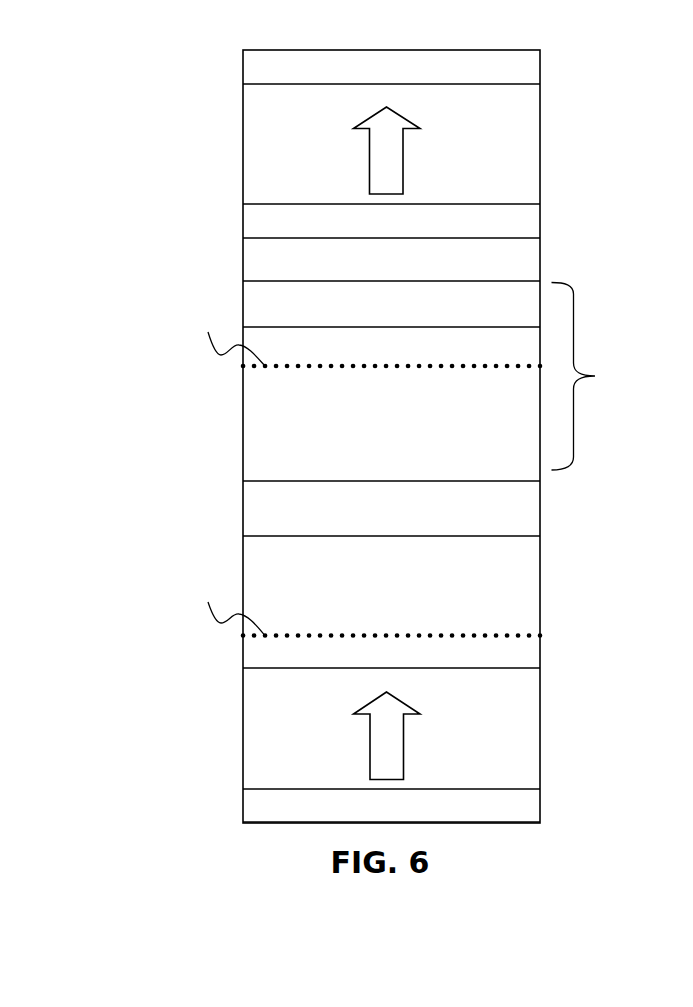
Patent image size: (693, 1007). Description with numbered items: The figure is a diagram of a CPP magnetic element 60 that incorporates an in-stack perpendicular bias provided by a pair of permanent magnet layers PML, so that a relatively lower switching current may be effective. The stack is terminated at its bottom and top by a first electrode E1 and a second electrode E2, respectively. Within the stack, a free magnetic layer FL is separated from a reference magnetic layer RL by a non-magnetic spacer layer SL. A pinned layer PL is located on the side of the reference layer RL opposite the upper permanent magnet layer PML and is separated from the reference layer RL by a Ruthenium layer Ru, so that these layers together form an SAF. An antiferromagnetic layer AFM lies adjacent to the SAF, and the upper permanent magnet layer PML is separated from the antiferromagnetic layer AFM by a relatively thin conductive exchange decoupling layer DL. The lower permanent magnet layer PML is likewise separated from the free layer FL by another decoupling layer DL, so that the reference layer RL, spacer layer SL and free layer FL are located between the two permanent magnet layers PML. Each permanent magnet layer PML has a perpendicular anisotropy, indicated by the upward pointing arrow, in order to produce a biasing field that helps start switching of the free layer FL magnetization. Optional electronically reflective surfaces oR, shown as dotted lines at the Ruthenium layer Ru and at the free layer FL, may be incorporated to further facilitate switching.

The CPP magnetic element 60 is at (170, 124).
The second electrode E2 is at (391, 72).
The permanent magnet layer PML is at (391, 448).
The decoupling layer DL is at (391, 443).
The antiferromagnetic layer AFM is at (391, 264).
The pinned layer PL is at (391, 310).
The Ruthenium layer Ru is at (391, 351).
The reference magnetic layer RL is at (391, 448).
The non-magnetic spacer layer SL is at (391, 513).
The free magnetic layer FL is at (391, 602).
The first electrode E1 is at (391, 804).
The electronically reflective surface oR is at (222, 468).
The synthetic antiferromagnet SAF is at (604, 377).